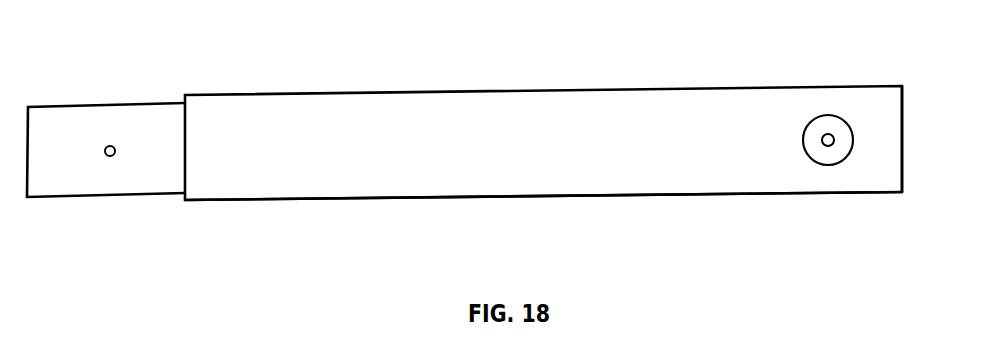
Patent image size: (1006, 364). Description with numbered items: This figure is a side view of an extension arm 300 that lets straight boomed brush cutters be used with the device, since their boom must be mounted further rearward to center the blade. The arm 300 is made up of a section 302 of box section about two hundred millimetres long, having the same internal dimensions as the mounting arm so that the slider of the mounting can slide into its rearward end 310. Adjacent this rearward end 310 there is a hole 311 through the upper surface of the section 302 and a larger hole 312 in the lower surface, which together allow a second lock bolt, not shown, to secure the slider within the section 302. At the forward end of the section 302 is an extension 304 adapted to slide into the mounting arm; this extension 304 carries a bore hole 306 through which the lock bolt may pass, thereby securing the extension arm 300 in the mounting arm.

The extension arm 300 is at (545, 69).
The section 302 is at (487, 198).
The extension 304 is at (118, 199).
The bore hole 306 is at (110, 146).
The rearward end 310 is at (904, 153).
The hole 311 is at (826, 146).
The larger hole 312 is at (837, 117).